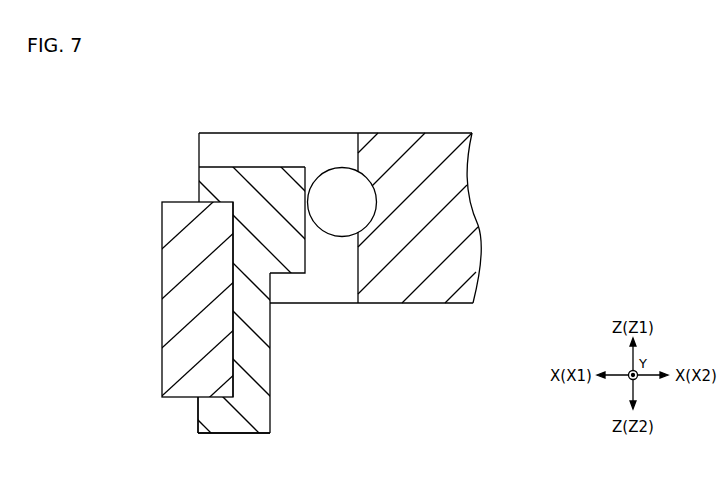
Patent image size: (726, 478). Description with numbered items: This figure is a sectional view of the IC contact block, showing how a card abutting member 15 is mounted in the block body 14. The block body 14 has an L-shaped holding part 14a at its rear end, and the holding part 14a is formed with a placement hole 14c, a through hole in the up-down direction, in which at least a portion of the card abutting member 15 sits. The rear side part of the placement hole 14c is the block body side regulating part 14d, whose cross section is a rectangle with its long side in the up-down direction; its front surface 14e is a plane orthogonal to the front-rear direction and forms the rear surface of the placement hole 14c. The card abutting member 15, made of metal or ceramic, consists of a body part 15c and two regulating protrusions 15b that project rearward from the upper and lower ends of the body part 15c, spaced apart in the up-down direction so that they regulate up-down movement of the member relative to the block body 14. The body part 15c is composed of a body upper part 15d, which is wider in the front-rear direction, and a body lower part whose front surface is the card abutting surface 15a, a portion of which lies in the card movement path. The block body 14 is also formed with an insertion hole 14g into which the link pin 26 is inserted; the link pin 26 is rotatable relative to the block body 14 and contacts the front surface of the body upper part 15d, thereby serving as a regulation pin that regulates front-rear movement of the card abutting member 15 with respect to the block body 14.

The block body 14 is at (428, 133).
The holding part 14a is at (217, 133).
The placement hole 14c is at (357, 304).
The block body side regulating part 14d is at (162, 296).
The front surface of regulating part 14e is at (234, 285).
The insertion hole 14g is at (342, 238).
The card abutting member 15 is at (263, 167).
The card abutting surface 15a is at (271, 373).
The regulating protrusion 15b is at (198, 187).
The body part 15c is at (271, 409).
The body upper part 15d is at (295, 167).
The link pin 26 is at (342, 167).